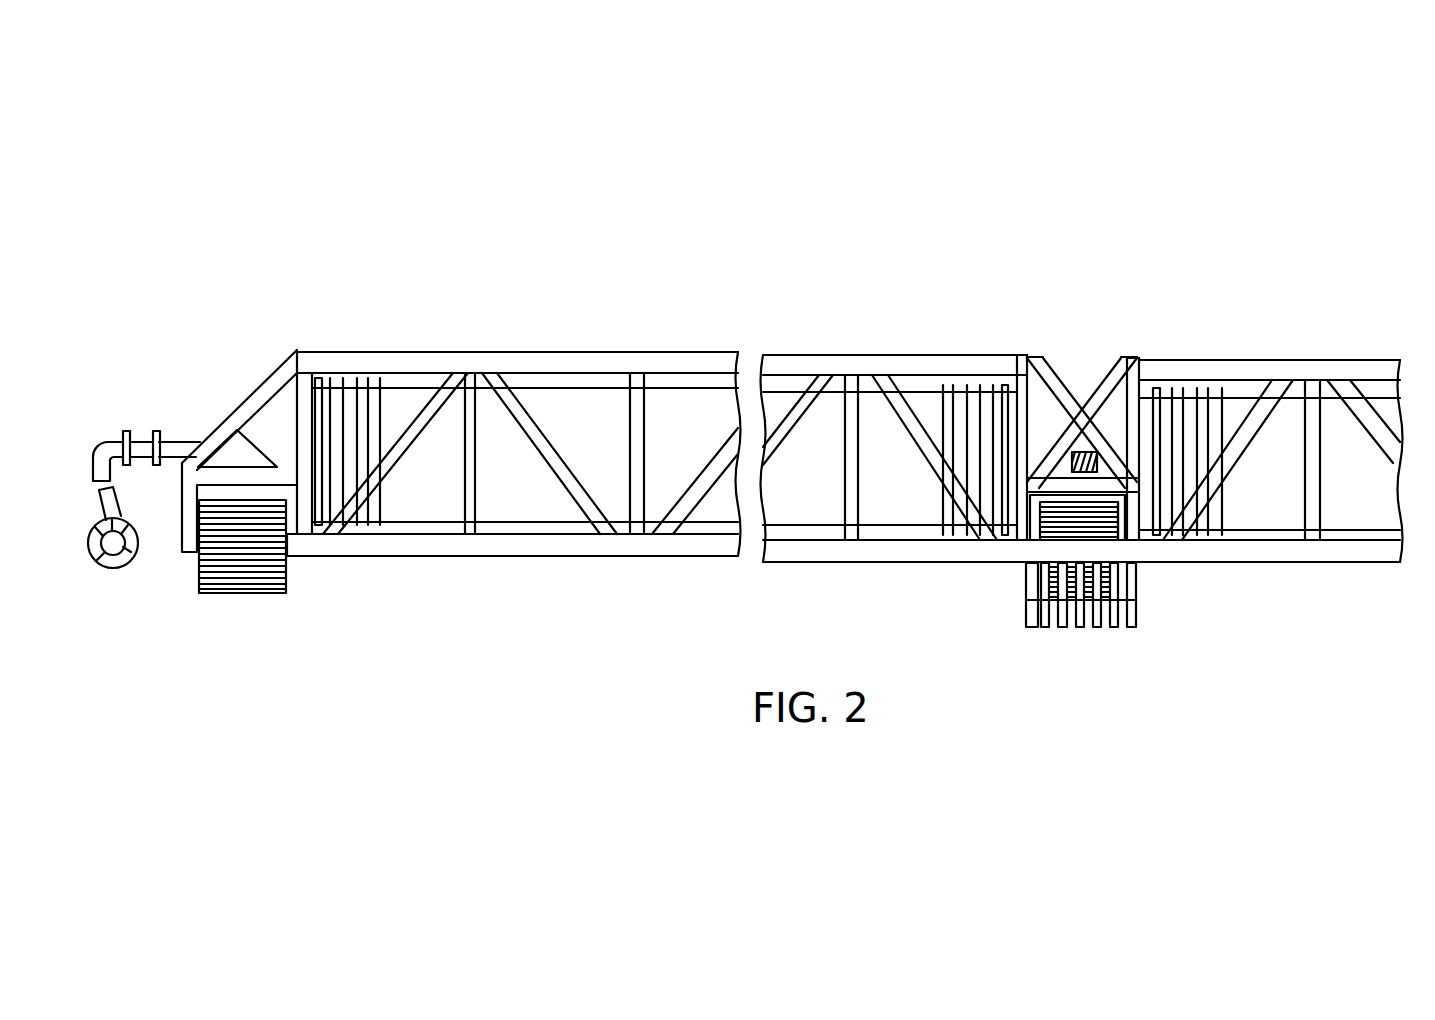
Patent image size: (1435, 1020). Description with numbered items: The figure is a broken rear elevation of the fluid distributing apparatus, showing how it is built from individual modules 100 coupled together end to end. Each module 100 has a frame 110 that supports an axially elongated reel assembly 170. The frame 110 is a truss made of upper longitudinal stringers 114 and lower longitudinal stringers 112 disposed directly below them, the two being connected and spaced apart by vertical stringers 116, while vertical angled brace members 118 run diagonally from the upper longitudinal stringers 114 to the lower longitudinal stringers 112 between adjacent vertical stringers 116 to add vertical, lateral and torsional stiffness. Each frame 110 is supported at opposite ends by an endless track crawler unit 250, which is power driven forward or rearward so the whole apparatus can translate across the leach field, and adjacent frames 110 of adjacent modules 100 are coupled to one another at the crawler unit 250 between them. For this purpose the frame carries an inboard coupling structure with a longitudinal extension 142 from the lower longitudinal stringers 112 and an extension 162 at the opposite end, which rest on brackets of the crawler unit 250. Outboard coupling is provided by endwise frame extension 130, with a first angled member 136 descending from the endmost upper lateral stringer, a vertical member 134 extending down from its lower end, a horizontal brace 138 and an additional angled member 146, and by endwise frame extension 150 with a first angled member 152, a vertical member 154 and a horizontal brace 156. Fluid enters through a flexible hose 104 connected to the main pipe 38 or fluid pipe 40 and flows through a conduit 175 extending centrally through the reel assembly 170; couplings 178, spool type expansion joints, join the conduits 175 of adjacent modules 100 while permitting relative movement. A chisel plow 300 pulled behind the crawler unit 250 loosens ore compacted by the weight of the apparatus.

The main pipe 38 is at (133, 575).
The fluid pipe 40 is at (118, 568).
The individual module 100 is at (1010, 284).
The flexible hose 104 is at (112, 432).
The frame 110 is at (809, 352).
The lower longitudinal stringers 112 is at (698, 556).
The upper longitudinal stringers 114 is at (679, 352).
The vertical stringers 116 is at (295, 405).
The vertical angled brace members 118 is at (388, 440).
The endwise frame extension 130 is at (1057, 375).
The vertical member 134 is at (1132, 519).
The first angled member 136 is at (1058, 453).
The horizontal brace 138 is at (1120, 542).
The longitudinal extension 142 is at (298, 545).
The additional angled member 146 is at (1057, 452).
The endwise frame extension 150 is at (1126, 358).
The first angled member 152 is at (248, 405).
The vertical member 154 is at (188, 502).
The horizontal brace 156 is at (262, 478).
The extension 162 is at (270, 457).
The axially elongated reel assembly 170 is at (583, 385).
The conduit 175 is at (183, 441).
The coupling 178 is at (141, 430).
The endless track crawler unit 250 is at (232, 598).
The chisel plow 300 is at (1150, 613).